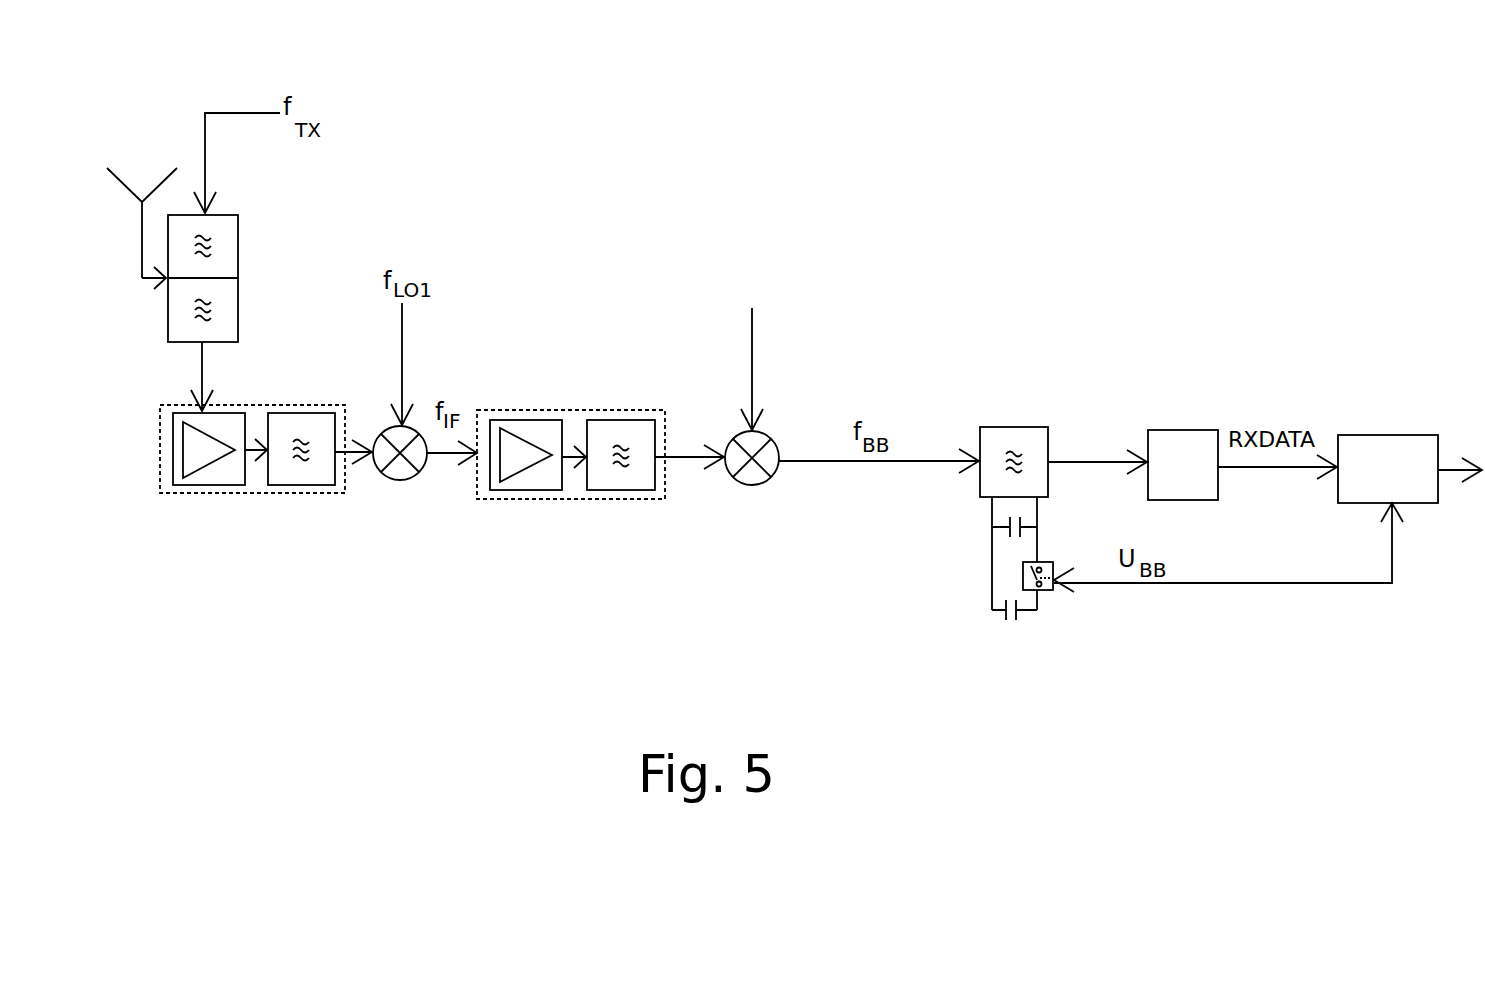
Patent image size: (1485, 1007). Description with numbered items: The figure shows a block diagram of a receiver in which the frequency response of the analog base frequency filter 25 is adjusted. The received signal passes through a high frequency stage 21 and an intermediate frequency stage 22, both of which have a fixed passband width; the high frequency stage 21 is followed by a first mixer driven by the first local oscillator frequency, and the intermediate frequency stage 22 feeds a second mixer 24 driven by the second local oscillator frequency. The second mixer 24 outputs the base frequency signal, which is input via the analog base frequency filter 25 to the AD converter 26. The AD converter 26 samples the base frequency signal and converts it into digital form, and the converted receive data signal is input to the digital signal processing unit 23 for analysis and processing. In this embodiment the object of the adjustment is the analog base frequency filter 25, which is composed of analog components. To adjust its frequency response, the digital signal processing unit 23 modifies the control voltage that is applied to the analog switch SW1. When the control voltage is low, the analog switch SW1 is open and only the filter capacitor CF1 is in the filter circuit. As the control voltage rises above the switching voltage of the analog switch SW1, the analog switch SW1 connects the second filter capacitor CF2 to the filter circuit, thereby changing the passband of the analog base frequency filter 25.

The high frequency stage 21 is at (238, 497).
The intermediate frequency stage 22 is at (567, 500).
The digital signal processing unit 23 is at (1378, 435).
The second mixer 24 is at (763, 485).
The analog base frequency filter 25 is at (1008, 427).
The AD converter 26 is at (1177, 430).
The analog switch SW1 is at (1048, 592).
The filter capacitor CF1 is at (1012, 516).
The second filter capacitor CF2 is at (1003, 617).